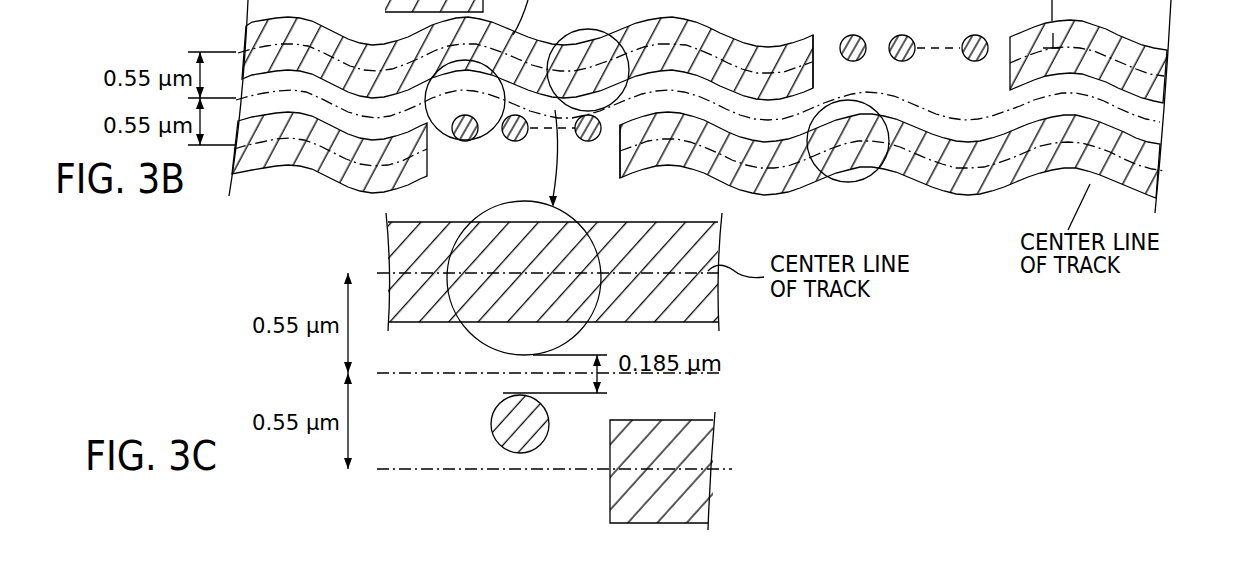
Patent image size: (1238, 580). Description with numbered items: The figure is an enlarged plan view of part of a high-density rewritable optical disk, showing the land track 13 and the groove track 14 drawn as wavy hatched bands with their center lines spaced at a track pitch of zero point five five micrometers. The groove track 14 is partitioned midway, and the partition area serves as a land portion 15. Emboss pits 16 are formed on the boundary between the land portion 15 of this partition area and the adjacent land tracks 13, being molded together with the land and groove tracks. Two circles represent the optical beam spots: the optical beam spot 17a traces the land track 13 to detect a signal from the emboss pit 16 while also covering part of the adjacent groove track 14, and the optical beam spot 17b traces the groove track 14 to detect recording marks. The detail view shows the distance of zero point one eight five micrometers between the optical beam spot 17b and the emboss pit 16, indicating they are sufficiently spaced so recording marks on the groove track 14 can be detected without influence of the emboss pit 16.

In FIG. 3B, the land track 13 is at (1156, 115).
In FIG. 3C, the land track 13 is at (707, 402).
In FIG. 3B, the groove track 14 is at (1156, 62).
In FIG. 3C, the groove track 14 is at (709, 246).
In FIG. 3B, the land portion 15 is at (607, 160).
In FIG. 3B, the emboss pit 16 is at (603, 147).
In FIG. 3C, the emboss pit 16 is at (491, 419).
In FIG. 3B, the optical beam spot 17a is at (440, 142).
In FIG. 3B, the optical beam spot 17b is at (597, 31).
In FIG. 3C, the optical beam spot 17b is at (470, 334).